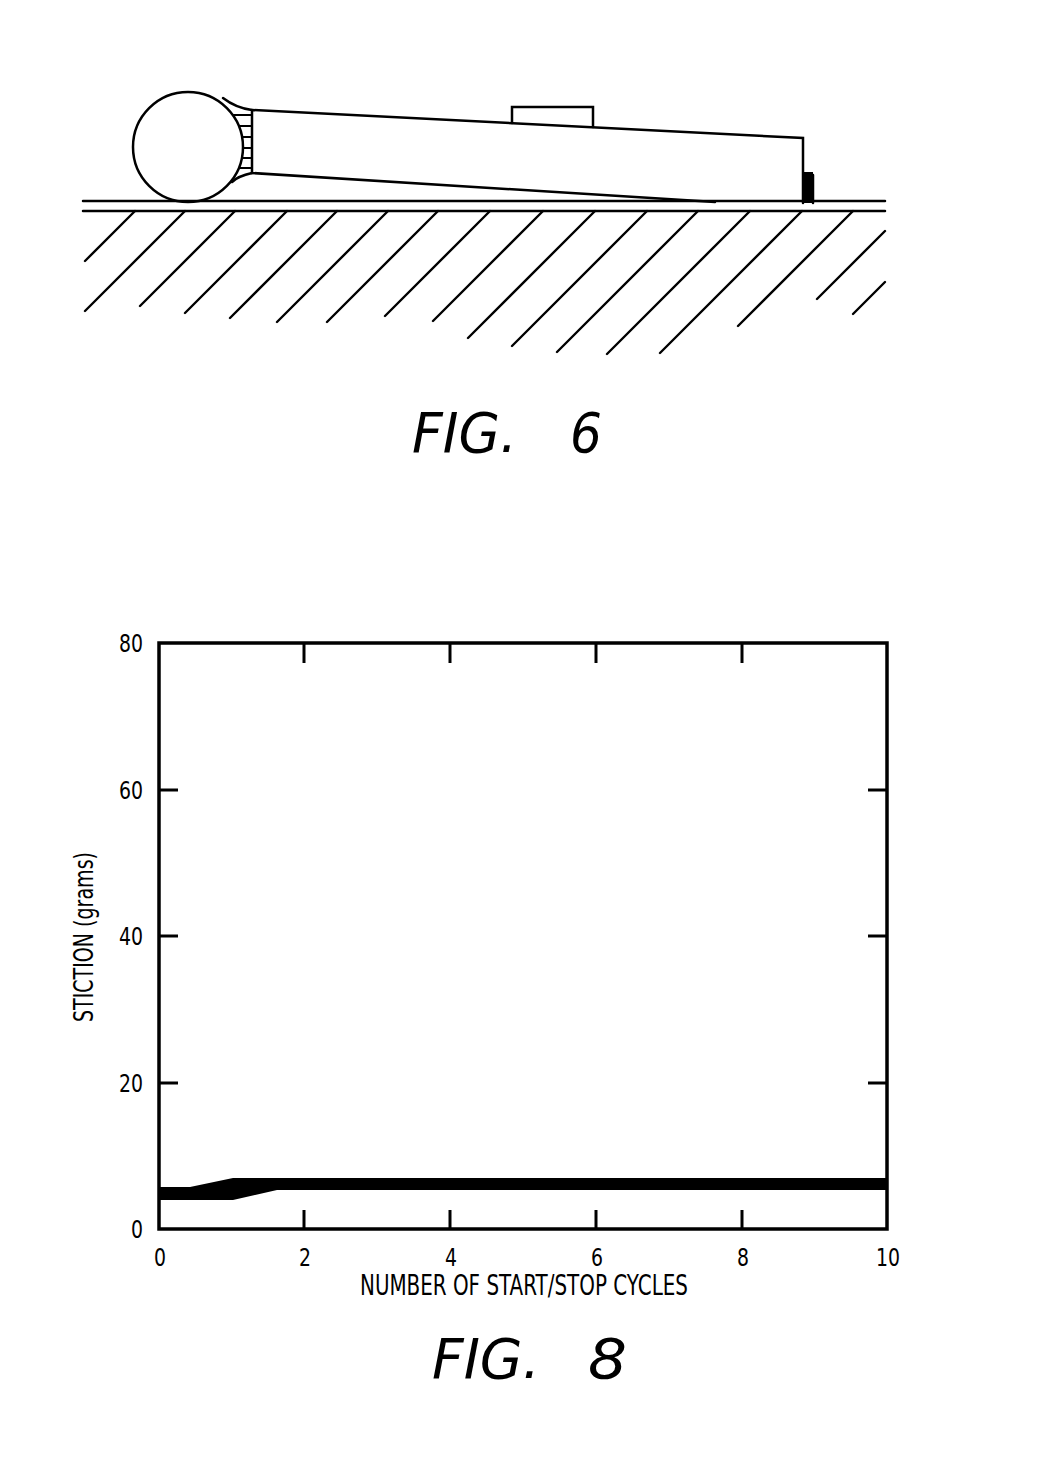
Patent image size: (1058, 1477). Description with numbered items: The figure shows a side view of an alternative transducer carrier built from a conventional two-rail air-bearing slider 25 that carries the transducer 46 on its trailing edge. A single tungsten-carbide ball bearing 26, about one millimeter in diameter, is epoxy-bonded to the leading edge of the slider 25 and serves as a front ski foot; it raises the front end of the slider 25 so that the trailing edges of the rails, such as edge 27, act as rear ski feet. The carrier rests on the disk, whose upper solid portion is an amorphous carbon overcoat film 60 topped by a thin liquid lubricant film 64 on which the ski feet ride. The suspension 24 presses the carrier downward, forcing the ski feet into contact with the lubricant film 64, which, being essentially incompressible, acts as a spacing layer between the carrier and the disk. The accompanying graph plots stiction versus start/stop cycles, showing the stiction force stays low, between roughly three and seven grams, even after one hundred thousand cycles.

The suspension 24 is at (547, 115).
The two-rail air-bearing slider 25 is at (628, 167).
The tungsten-carbide ball bearing 26 is at (183, 138).
The trailing edge of rail 27 is at (783, 200).
The transducer 46 is at (814, 185).
The carbon overcoat film 60 is at (470, 251).
The lubricant film 64 is at (122, 207).